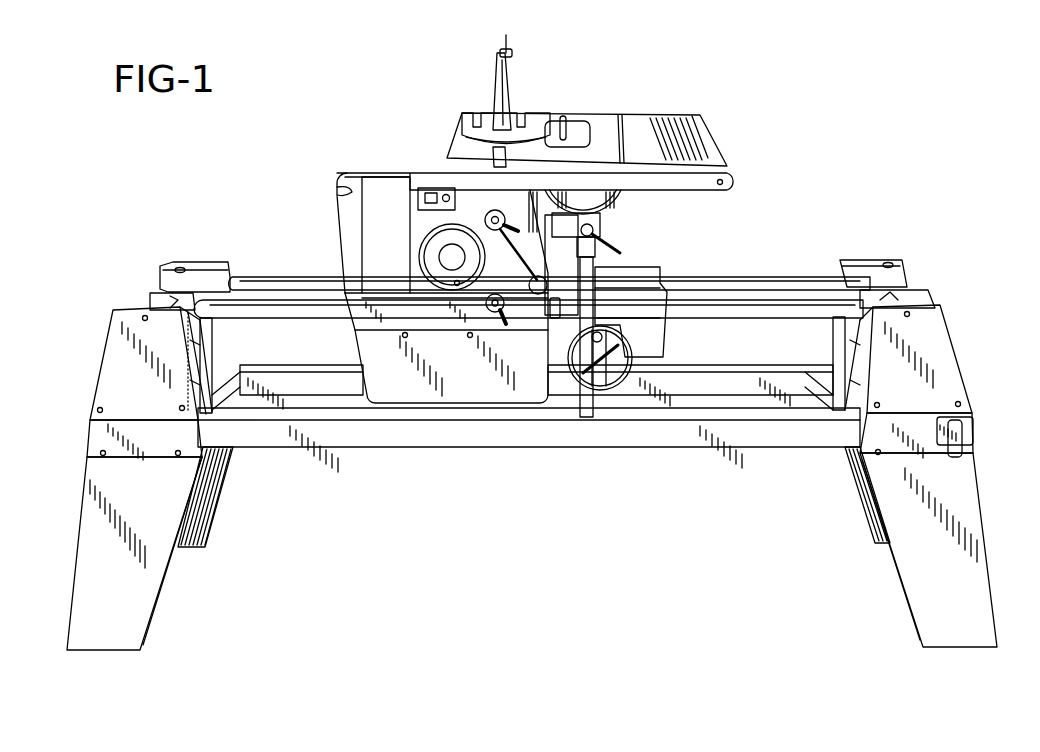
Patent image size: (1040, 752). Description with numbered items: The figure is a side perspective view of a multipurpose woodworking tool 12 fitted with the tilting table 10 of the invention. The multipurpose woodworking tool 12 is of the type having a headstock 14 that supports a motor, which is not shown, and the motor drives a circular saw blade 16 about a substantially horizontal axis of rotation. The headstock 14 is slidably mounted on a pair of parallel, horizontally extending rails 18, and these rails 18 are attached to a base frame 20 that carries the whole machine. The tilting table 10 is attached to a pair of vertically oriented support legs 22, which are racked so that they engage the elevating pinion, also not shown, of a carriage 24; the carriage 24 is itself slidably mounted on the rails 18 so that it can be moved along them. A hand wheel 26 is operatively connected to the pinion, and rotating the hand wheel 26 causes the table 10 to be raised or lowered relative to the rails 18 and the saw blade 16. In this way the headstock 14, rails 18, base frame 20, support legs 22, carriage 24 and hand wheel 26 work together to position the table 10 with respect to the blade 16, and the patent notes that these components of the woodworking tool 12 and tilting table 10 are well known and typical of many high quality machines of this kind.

The tilting table 10 is at (733, 125).
The multipurpose woodworking tool 12 is at (766, 262).
The headstock 14 is at (370, 225).
The circular saw blade 16 is at (572, 108).
The rails 18 is at (243, 305).
The base frame 20 is at (937, 340).
The support legs 22 is at (598, 260).
The carriage 24 is at (660, 310).
The hand wheel 26 is at (608, 397).